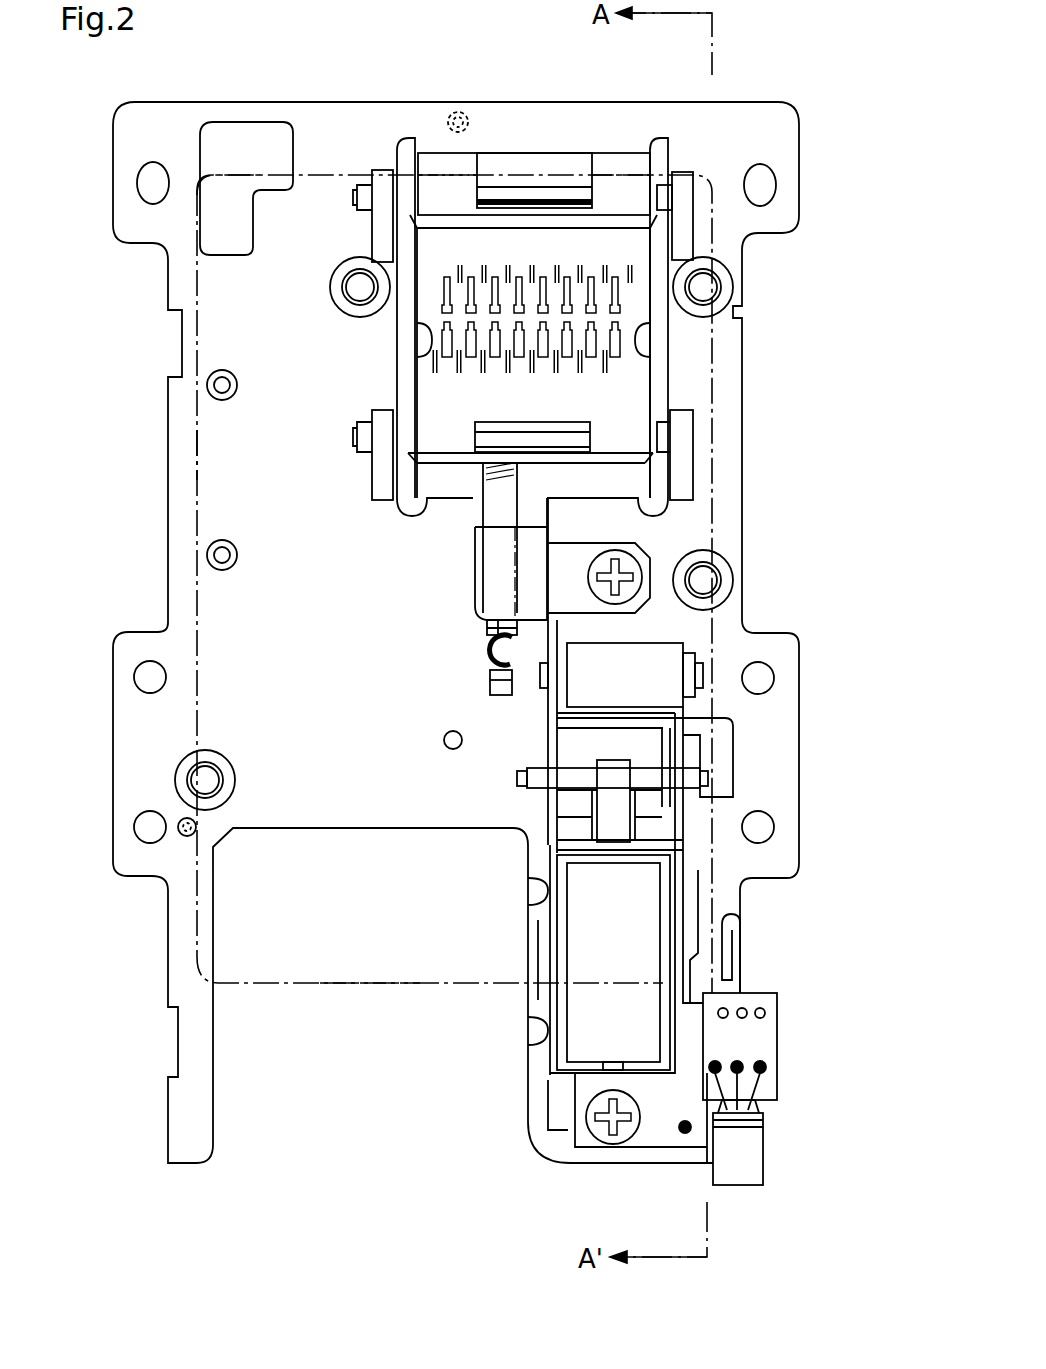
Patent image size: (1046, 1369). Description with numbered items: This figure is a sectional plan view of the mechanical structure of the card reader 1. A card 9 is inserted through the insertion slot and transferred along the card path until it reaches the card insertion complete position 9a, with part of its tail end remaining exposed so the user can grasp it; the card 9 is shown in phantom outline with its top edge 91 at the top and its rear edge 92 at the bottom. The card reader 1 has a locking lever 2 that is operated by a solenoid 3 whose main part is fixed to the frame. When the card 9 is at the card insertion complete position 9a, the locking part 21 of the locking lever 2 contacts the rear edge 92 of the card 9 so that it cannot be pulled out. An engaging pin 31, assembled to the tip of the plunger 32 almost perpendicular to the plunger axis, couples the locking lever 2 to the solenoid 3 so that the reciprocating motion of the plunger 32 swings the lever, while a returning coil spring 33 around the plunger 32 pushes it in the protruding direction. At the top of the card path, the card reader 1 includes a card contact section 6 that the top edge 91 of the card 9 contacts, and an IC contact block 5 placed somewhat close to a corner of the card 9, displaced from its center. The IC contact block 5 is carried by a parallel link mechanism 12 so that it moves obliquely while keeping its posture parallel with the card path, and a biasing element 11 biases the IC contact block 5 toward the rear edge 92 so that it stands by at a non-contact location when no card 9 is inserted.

The card reader 1 is at (110, 345).
The locking lever 2 is at (686, 901).
The solenoid 3 is at (590, 942).
The IC contact block 5 is at (433, 400).
The card contact section 6 is at (628, 176).
The card 9 is at (262, 985).
The card insertion complete position 9a is at (195, 457).
The biasing element 11 is at (480, 568).
The parallel link mechanism 12 is at (347, 232).
The locking part 21 is at (685, 1015).
The engaging pin 31 is at (533, 770).
The plunger 32 is at (605, 805).
The returning coil spring 33 is at (640, 832).
The top edge 91 is at (328, 172).
The rear edge 92 is at (362, 987).